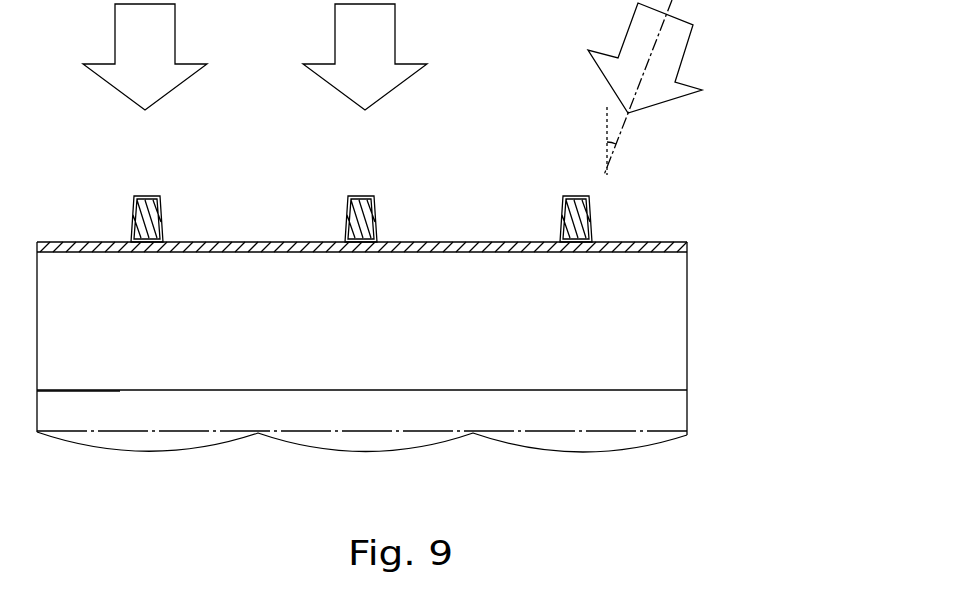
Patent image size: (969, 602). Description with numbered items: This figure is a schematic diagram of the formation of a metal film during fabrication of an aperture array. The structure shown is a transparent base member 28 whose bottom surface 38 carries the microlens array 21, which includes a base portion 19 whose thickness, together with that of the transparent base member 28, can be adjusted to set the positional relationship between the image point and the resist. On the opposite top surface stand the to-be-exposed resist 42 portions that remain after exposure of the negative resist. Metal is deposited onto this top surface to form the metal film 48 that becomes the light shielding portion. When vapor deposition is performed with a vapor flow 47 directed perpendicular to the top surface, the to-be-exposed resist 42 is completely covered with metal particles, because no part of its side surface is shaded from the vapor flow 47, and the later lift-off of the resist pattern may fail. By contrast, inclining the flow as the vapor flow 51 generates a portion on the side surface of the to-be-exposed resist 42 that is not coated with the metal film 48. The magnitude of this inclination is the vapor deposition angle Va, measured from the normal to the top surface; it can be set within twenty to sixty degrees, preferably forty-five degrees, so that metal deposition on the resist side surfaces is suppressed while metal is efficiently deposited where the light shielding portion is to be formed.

The vapor flow 47 is at (153, 53).
The inclined vapor flow 51 is at (660, 63).
The vapor deposition angle Va is at (610, 143).
The to-be-exposed resist 42 is at (358, 199).
The metal film 48 is at (673, 242).
The transparent base member 28 is at (705, 252).
The microlens array 21 is at (705, 391).
The bottom surface 38 is at (75, 391).
The base portion 19 is at (168, 410).